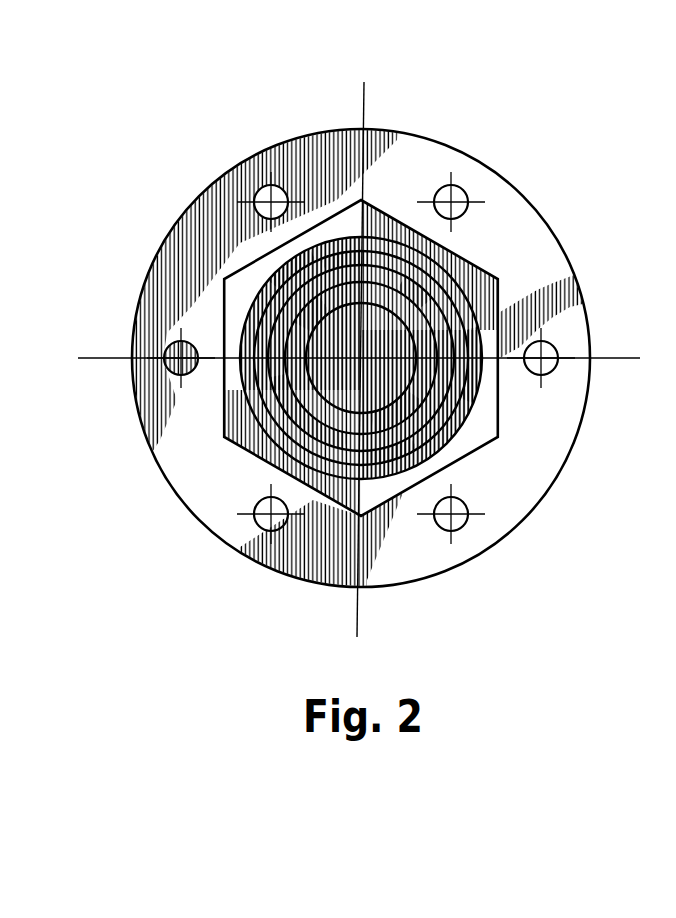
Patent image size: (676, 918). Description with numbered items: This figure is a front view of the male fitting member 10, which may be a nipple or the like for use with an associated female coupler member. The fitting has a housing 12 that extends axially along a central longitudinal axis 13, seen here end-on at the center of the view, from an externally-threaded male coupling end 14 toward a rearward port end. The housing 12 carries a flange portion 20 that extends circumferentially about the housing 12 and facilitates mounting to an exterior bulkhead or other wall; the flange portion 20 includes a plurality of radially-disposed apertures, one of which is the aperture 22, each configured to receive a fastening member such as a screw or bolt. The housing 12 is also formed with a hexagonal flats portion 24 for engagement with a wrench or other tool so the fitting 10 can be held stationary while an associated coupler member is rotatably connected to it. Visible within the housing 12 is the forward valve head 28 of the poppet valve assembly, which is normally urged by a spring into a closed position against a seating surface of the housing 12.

The male fitting member 10 is at (507, 95).
The housing 12 is at (483, 327).
The central longitudinal axis 13 is at (352, 358).
The externally-threaded male coupling end 14 is at (470, 418).
The flange portion 20 is at (546, 220).
The aperture 22 is at (458, 190).
The hexagonal flats portion 24 is at (498, 279).
The forward valve head 28 is at (300, 322).